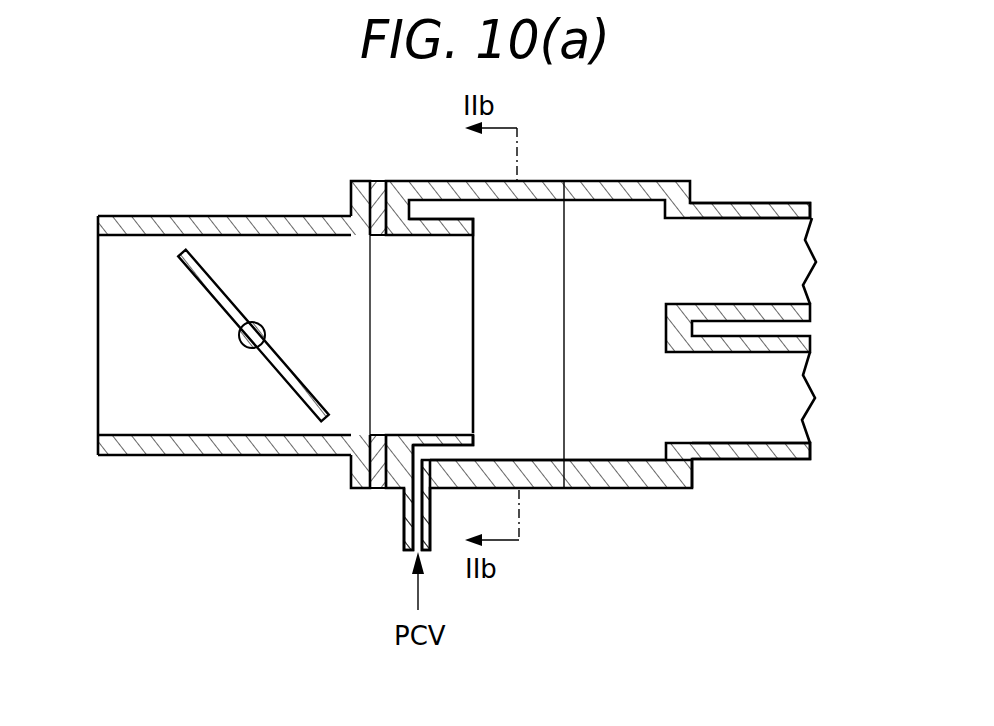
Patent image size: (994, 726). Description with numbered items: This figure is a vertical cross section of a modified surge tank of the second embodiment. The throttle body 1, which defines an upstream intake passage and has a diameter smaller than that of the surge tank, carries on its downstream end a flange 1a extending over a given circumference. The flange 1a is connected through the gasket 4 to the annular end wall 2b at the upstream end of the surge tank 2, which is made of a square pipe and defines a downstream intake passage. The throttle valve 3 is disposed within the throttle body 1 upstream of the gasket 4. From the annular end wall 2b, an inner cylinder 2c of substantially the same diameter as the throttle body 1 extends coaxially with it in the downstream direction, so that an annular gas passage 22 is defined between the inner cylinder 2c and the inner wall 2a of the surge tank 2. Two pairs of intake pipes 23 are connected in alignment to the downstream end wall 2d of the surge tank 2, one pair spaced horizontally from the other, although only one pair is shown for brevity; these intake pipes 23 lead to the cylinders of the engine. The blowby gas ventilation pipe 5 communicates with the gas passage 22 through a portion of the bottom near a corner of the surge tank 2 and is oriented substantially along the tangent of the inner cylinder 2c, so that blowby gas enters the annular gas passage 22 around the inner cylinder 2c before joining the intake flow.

The throttle body 1 is at (166, 216).
The flange 1a is at (351, 190).
The surge tank 2 is at (641, 181).
The inner wall of the surge tank 2a is at (578, 462).
The annular end wall 2b is at (418, 213).
The inner cylinder 2c is at (476, 230).
The downstream end wall 2d is at (695, 475).
The throttle valve 3 is at (278, 372).
The gasket 4 is at (380, 490).
The blowby gas ventilation pipe 5 is at (405, 515).
The annular gas passage 22 is at (455, 453).
The intake pipes 23 is at (755, 203).